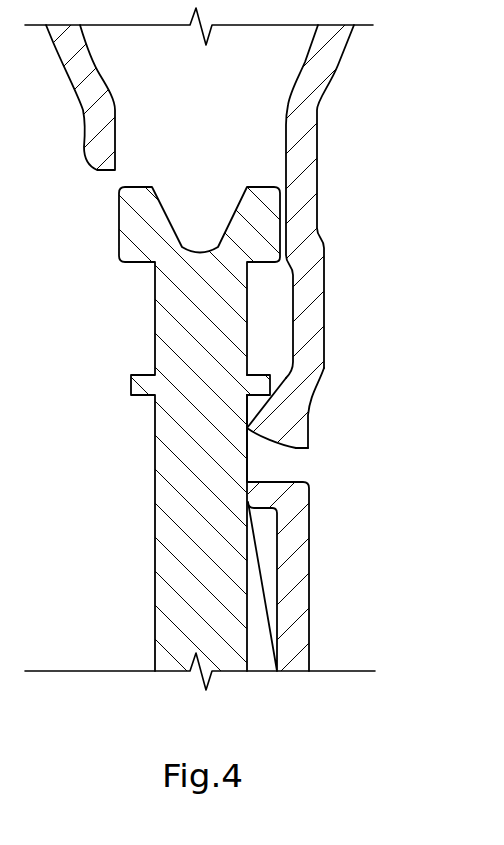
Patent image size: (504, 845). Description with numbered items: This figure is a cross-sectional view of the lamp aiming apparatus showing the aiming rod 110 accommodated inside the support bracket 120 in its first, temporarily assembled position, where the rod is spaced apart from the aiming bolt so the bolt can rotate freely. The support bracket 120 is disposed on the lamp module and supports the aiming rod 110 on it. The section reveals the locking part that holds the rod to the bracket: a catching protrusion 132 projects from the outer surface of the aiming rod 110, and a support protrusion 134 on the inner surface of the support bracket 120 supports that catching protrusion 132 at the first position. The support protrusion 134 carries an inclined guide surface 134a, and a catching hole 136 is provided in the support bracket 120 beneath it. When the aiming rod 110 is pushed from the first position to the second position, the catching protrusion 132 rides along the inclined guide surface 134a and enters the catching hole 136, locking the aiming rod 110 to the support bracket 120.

The aiming rod 110 is at (182, 555).
The support bracket 120 is at (290, 570).
The catching protrusion 132 is at (258, 385).
The support protrusion 134 is at (257, 432).
The inclined guide surface 134a is at (258, 420).
The catching hole 136 is at (298, 450).